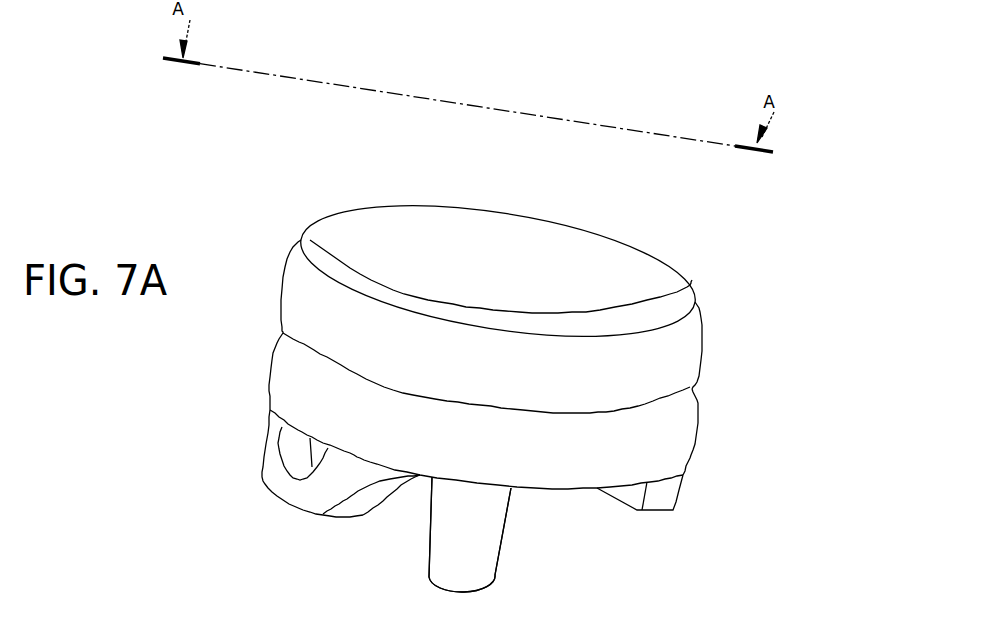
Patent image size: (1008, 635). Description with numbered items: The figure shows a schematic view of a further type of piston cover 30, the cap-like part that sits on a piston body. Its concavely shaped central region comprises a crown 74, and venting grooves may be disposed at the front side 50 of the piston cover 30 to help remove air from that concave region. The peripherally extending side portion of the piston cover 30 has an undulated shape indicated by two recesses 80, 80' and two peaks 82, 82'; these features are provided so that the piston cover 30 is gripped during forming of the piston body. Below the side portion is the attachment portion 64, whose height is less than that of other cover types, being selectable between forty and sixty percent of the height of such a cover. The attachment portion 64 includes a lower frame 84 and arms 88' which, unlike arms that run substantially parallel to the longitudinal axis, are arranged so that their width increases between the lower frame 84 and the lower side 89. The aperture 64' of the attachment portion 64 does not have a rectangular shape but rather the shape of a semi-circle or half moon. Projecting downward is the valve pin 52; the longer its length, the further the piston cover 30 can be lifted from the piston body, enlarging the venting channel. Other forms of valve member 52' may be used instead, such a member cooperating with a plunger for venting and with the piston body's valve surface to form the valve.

The piston cover 30 is at (260, 170).
The front side 50 is at (645, 277).
The crown 74 is at (545, 248).
The recess 80 is at (737, 321).
The peak 82 is at (528, 362).
The recess 80' is at (538, 373).
The peak 82' is at (727, 432).
The lower side 89 is at (570, 492).
The valve pin 52 is at (517, 556).
The valve member 52' is at (478, 541).
The lower frame 84 is at (293, 490).
The attachment portion 64 is at (532, 539).
The aperture 64' is at (247, 454).
The arms 88' is at (496, 535).